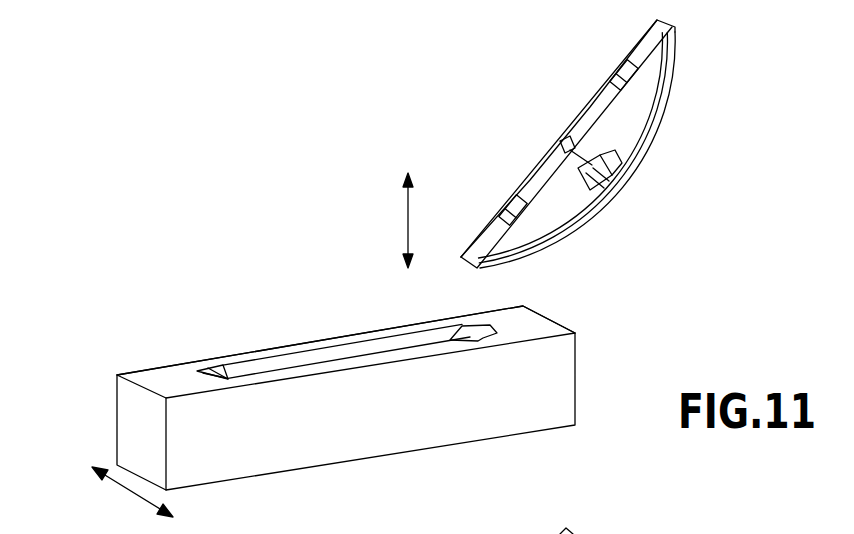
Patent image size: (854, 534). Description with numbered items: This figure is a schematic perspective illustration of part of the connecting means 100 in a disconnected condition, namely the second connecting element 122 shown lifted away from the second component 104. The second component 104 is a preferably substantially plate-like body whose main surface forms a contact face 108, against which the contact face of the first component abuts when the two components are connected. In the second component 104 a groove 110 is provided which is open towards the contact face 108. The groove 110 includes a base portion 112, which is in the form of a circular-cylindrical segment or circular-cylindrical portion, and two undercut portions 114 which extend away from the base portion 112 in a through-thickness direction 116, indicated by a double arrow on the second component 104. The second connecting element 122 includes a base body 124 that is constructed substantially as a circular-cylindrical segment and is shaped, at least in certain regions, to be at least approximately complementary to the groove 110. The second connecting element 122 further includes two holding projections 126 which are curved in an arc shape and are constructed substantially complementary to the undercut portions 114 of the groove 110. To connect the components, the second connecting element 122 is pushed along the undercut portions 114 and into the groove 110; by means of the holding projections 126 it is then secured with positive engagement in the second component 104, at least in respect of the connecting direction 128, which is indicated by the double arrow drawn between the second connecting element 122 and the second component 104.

The connecting means 100 is at (637, 277).
The second component 104 is at (237, 452).
The contact face 108 is at (150, 378).
The groove 110 is at (297, 362).
The base portion 112 is at (352, 350).
The undercut portions 114 is at (228, 380).
The through-thickness direction 116 is at (132, 494).
The second connecting element 122 is at (623, 137).
The base body 124 is at (640, 106).
The holding projections 126 is at (567, 228).
The connecting direction 128 is at (408, 220).